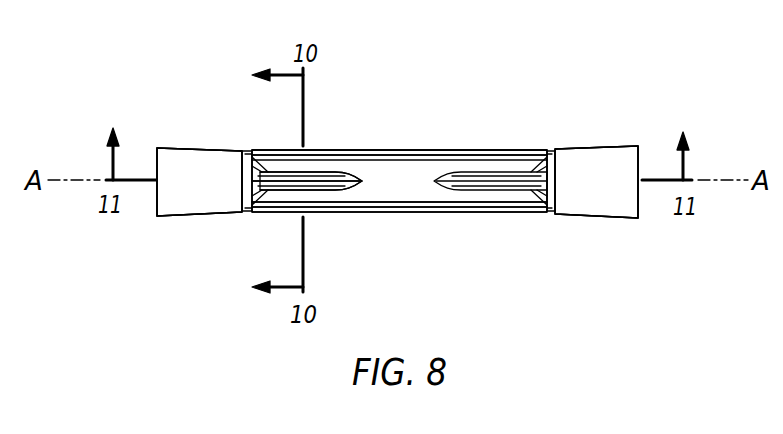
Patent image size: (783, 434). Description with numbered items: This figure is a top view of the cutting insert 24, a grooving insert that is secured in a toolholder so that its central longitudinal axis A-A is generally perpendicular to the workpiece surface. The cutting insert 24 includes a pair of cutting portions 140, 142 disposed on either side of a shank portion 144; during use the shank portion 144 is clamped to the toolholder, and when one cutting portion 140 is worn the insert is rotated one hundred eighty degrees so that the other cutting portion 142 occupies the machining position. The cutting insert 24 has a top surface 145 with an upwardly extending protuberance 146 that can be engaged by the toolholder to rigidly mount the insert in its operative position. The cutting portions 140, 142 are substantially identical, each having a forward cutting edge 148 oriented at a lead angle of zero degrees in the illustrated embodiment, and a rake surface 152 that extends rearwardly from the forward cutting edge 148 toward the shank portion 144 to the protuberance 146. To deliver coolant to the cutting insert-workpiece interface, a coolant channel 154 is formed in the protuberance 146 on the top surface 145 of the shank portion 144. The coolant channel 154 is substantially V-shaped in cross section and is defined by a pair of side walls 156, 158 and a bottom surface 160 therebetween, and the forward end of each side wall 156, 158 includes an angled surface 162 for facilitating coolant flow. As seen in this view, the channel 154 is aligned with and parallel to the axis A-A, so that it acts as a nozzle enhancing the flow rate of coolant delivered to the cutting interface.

The cutting insert 24 is at (534, 62).
The cutting portion 140 is at (180, 113).
The cutting portion 142 is at (629, 128).
The shank portion 144 is at (455, 133).
The top surface 145 is at (412, 198).
The protuberance 146 is at (377, 175).
The forward cutting edge 148 is at (157, 158).
The rake surface 152 is at (203, 167).
The coolant channel 154 is at (281, 161).
The side wall 156 is at (283, 189).
The side wall 158 is at (311, 176).
The bottom surface 160 is at (318, 184).
The angled surface 162 is at (243, 166).